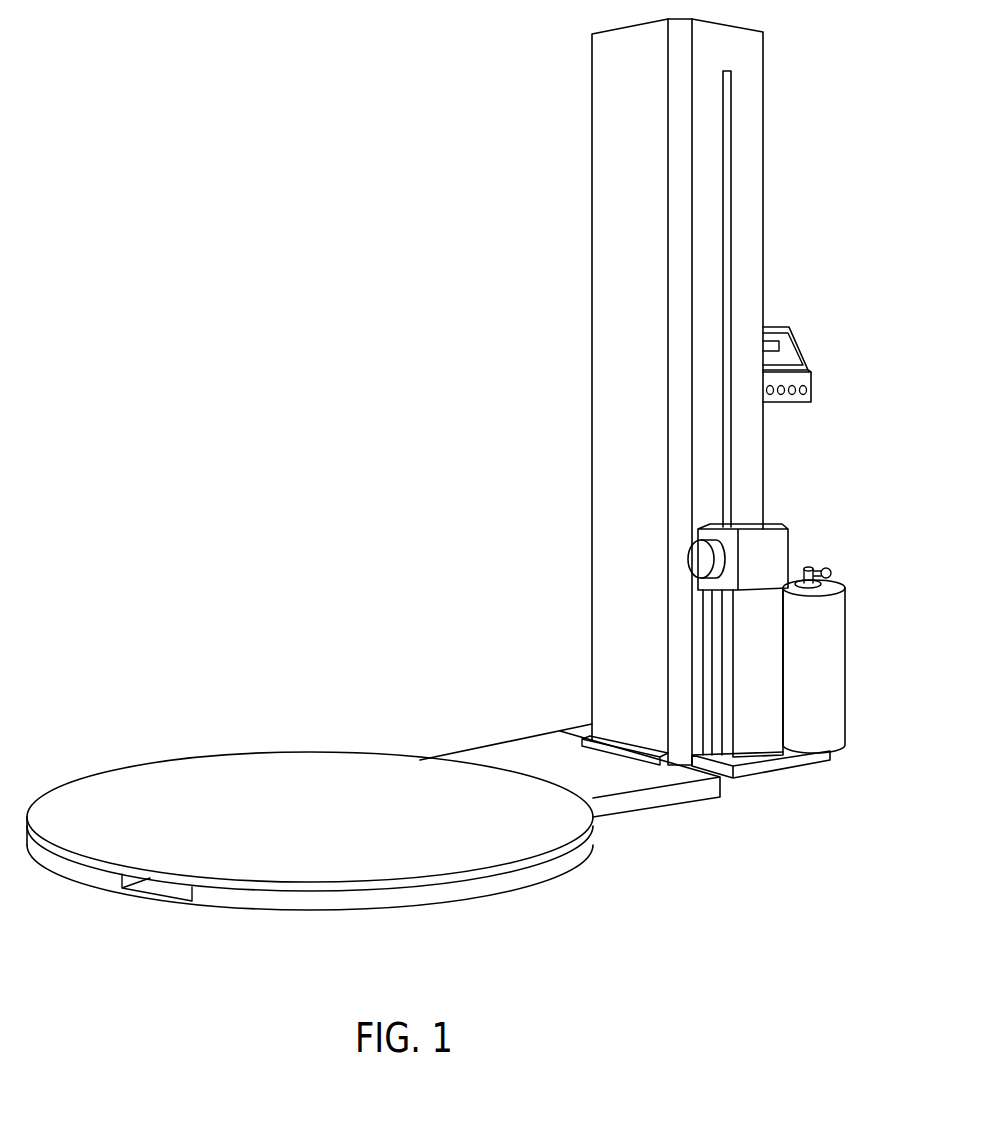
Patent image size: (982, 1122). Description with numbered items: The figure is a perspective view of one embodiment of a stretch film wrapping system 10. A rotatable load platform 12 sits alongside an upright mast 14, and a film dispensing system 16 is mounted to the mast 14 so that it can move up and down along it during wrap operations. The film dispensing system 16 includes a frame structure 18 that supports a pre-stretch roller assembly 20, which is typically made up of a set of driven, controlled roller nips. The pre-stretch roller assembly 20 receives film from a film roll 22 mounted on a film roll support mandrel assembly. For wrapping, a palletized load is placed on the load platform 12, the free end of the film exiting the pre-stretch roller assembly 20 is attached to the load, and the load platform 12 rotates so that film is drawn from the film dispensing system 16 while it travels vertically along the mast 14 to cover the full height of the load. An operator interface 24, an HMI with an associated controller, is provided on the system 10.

The stretch film wrapping system 10 is at (353, 190).
The rotatable load platform 12 is at (291, 774).
The mast 14 is at (606, 131).
The film dispensing system 16 is at (807, 543).
The frame structure 18 is at (775, 765).
The pre-stretch roller assembly 20 is at (742, 627).
The film roll 22 is at (838, 641).
The operator interface 24 is at (806, 350).